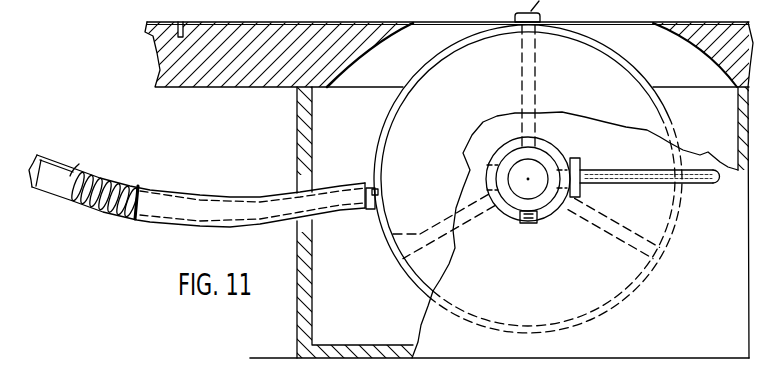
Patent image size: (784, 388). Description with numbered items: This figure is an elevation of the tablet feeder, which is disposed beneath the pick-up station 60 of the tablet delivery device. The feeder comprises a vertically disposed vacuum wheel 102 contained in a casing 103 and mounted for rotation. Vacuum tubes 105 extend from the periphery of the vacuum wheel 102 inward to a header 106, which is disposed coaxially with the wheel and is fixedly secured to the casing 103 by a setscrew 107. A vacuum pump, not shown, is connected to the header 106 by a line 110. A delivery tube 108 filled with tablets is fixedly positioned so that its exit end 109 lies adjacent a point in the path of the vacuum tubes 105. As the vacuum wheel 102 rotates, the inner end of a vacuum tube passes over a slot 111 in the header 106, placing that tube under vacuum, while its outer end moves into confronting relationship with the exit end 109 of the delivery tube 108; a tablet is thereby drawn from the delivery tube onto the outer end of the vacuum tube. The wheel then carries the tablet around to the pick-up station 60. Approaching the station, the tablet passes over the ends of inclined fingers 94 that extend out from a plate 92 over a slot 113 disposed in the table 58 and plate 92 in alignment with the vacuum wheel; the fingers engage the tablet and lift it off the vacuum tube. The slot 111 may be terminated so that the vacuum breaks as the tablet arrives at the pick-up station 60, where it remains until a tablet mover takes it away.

The table 58 is at (157, 50).
The plate 92 is at (222, 22).
The inclined fingers 94 is at (502, 22).
The pick-up station 60 is at (517, 7).
The slot 113 is at (370, 45).
The vacuum wheel 102 is at (380, 128).
The casing 103 is at (297, 153).
The vacuum tubes 105 is at (393, 238).
The header 106 is at (547, 160).
The setscrew 107 is at (535, 223).
The delivery tube 108 is at (232, 197).
The exit end 109 is at (371, 211).
The line 110 is at (704, 184).
The slot 111 is at (481, 157).